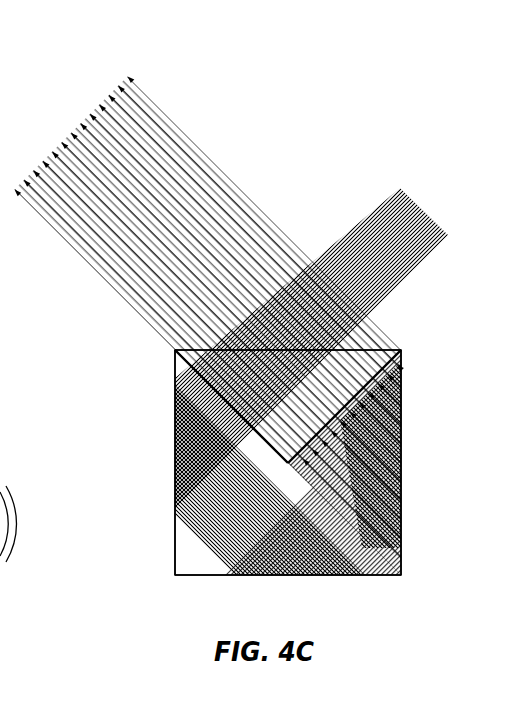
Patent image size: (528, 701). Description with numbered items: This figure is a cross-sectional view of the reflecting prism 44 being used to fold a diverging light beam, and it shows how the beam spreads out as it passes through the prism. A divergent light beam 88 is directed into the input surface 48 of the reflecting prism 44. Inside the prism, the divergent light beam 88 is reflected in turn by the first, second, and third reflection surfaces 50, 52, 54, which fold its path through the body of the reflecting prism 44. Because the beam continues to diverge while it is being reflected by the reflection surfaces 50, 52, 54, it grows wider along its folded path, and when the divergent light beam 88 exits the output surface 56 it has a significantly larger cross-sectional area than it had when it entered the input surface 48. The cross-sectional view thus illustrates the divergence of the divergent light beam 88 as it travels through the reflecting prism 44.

The reflecting prism 44 is at (133, 518).
The input surface 48 is at (175, 366).
The first reflection surface 50 is at (175, 541).
The second reflection surface 52 is at (218, 576).
The third reflection surface 54 is at (402, 409).
The output surface 56 is at (399, 351).
The divergent light beam 88 is at (241, 194).